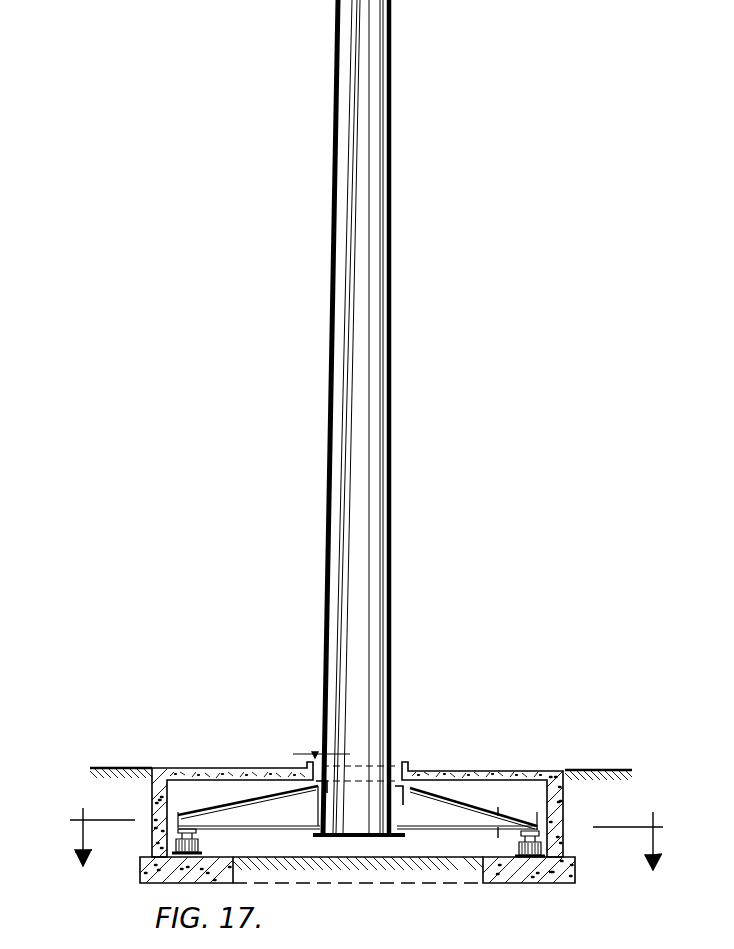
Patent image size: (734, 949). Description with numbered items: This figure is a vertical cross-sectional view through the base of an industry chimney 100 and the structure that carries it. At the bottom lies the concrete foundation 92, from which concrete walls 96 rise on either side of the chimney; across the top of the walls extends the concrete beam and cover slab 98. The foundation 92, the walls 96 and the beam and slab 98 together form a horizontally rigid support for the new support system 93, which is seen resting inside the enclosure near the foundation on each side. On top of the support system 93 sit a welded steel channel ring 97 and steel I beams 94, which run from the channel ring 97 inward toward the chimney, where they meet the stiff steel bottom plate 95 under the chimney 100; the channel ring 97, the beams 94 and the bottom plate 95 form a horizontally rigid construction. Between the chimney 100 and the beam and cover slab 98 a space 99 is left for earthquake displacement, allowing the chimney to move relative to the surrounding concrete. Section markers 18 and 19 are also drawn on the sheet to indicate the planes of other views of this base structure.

The industry chimney 100 is at (395, 734).
The space, earthquake displacement 99 is at (541, 825).
The concrete beam and cover slab 98 is at (198, 787).
The welded steel channel ring 97 is at (178, 818).
The concrete wall 96 is at (563, 814).
The stiff steel bottom plate 95 is at (385, 838).
The steel I beams 94 is at (447, 816).
The support system 93 is at (200, 843).
The concrete foundation 92 is at (505, 884).
The section line 19- 19 is at (498, 823).
The section line 18- 18 is at (361, 839).